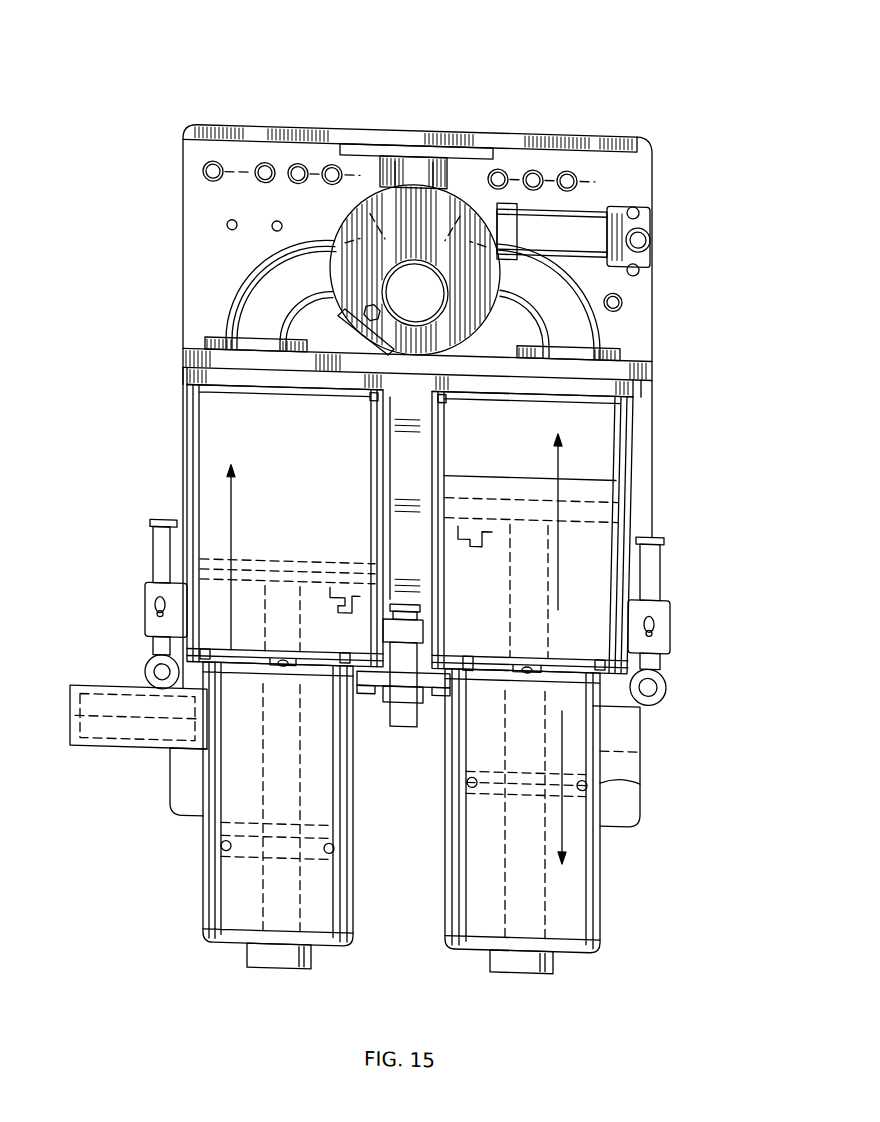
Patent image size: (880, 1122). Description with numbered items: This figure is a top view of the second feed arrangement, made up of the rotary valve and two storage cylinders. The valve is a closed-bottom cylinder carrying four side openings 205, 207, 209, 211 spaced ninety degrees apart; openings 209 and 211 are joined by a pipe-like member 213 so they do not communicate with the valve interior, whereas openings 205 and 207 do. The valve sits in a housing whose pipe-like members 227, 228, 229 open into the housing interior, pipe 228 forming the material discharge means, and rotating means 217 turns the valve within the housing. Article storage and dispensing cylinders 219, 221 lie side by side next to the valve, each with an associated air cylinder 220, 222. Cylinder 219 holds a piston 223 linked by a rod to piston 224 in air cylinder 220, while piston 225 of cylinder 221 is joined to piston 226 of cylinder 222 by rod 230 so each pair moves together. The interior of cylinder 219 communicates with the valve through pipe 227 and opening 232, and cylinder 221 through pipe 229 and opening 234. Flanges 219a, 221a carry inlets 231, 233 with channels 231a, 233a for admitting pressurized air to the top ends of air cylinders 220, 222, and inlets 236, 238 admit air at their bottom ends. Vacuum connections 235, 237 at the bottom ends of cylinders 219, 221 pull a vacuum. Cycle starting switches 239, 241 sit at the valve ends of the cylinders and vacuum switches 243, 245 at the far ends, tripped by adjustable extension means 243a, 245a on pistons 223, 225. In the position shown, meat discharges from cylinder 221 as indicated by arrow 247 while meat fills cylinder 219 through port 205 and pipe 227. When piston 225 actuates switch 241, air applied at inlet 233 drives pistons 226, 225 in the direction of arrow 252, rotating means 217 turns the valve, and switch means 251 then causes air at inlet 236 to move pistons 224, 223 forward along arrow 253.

The side opening 205 is at (352, 250).
The side opening 207 is at (377, 348).
The side opening 209 is at (503, 290).
The side opening 211 is at (412, 168).
The pipe-like member 213 is at (455, 224).
The rotating means 217 is at (577, 223).
The article storage and dispensing cylinder 219 is at (228, 442).
The flange 219a is at (253, 665).
The air cylinder 220 is at (223, 801).
The article storage and dispensing cylinder 221 is at (617, 440).
The flange 221a is at (572, 668).
The air cylinder 222 is at (568, 863).
The piston 223 is at (250, 567).
The piston 224 is at (232, 828).
The piston 225 is at (508, 496).
The piston 226 is at (520, 780).
The pipe-like member 227 is at (272, 286).
The pipe-like member 228 is at (427, 150).
The pipe-like member 229 is at (575, 319).
The rod 230 is at (610, 745).
The inlet 231 is at (148, 680).
The channel 231a is at (200, 639).
The opening 232 is at (203, 394).
The inlet 233 is at (666, 666).
The channel 233a is at (595, 655).
The opening 234 is at (640, 390).
The vacuum connection 235 is at (287, 675).
The inlet 236 is at (257, 962).
The vacuum connection 237 is at (527, 669).
The inlet 238 is at (520, 967).
The cycle starting switch 239 is at (368, 398).
The cycle starting switch 241 is at (447, 399).
The vacuum switch 243 is at (357, 719).
The extension means 243a is at (332, 584).
The vacuum switch 245 is at (459, 662).
The extension means 245a is at (465, 544).
The arrow 247 is at (560, 471).
The switch means 251 is at (297, 315).
The arrow 252 is at (600, 777).
The arrow 253 is at (235, 498).